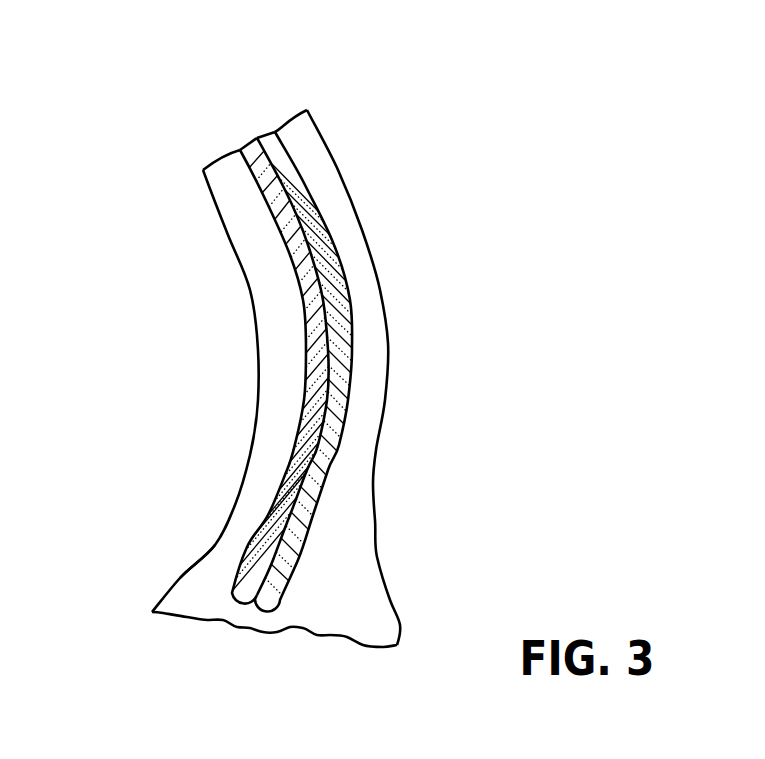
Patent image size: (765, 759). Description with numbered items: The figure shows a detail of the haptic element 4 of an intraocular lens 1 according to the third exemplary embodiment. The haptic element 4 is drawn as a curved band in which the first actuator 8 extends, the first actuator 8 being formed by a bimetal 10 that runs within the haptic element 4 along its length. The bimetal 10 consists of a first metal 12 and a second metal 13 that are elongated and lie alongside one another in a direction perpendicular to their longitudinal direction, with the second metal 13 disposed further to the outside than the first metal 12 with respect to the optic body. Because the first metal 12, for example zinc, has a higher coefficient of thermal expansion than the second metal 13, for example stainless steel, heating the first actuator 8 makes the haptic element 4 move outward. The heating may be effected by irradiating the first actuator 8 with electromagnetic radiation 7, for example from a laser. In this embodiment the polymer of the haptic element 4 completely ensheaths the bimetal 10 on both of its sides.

The intraocular lens 1 is at (104, 334).
The haptic element 4 is at (392, 347).
The electromagnetic radiation 7 is at (224, 571).
The first actuator 8 is at (236, 626).
The bimetal of the first actuator 10 is at (227, 147).
The first metal 12 is at (297, 257).
The second metal 13 is at (326, 247).